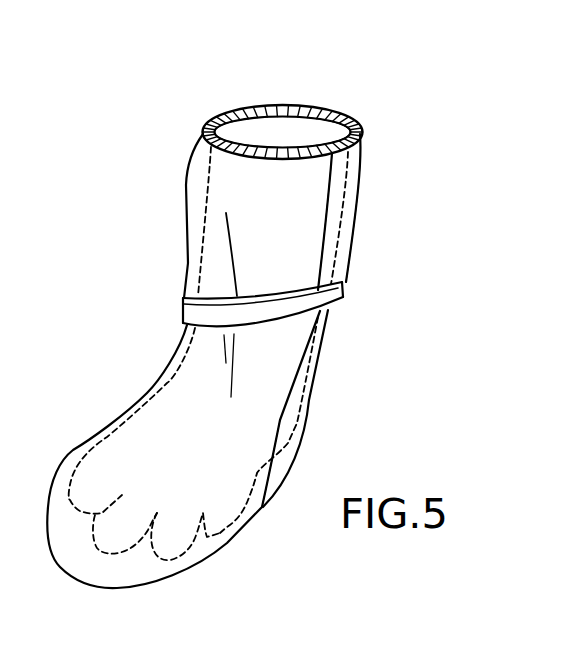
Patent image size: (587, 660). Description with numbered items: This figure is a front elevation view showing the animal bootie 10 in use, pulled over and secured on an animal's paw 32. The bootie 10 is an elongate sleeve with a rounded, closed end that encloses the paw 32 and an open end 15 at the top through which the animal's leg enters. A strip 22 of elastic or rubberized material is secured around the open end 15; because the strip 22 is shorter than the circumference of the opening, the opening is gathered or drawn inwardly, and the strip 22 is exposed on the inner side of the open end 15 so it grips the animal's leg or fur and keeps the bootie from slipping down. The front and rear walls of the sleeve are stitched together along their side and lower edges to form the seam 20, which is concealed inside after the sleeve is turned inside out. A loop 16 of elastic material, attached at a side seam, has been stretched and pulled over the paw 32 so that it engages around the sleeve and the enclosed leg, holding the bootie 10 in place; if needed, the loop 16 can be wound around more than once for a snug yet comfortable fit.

The animal bootie 10 is at (165, 237).
The open end 15 is at (293, 104).
The loop 16 is at (345, 282).
The seam 20 is at (332, 193).
The strip 22 is at (362, 121).
The animal's paw 32 is at (243, 447).